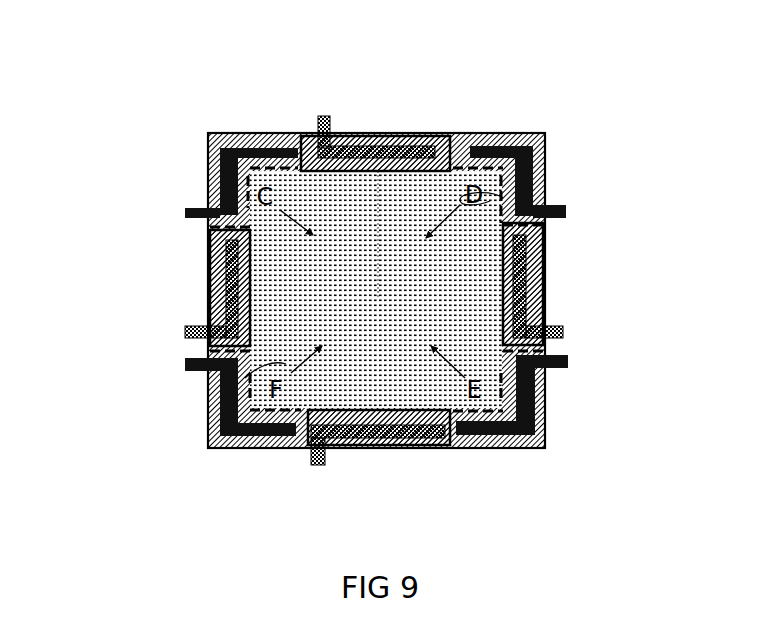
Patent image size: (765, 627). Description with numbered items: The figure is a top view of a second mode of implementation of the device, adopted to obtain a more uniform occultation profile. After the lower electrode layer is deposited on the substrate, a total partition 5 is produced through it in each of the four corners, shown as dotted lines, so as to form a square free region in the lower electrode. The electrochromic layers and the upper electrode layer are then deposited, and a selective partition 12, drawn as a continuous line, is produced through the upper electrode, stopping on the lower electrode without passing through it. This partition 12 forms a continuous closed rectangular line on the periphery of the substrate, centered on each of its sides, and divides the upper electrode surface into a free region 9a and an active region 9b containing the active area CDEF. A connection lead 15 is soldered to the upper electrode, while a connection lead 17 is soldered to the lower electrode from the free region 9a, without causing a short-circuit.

The connection lead 15 is at (240, 133).
The partition 12 is at (337, 127).
The connection lead 17 is at (387, 140).
The free region 9a is at (198, 205).
The active region 9b is at (538, 132).
The total partition 5 is at (534, 178).